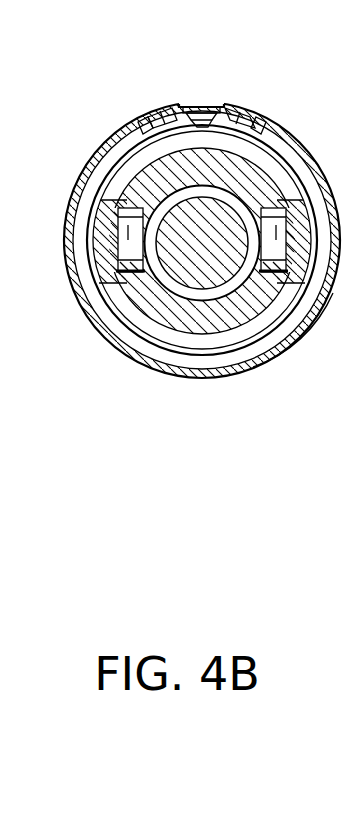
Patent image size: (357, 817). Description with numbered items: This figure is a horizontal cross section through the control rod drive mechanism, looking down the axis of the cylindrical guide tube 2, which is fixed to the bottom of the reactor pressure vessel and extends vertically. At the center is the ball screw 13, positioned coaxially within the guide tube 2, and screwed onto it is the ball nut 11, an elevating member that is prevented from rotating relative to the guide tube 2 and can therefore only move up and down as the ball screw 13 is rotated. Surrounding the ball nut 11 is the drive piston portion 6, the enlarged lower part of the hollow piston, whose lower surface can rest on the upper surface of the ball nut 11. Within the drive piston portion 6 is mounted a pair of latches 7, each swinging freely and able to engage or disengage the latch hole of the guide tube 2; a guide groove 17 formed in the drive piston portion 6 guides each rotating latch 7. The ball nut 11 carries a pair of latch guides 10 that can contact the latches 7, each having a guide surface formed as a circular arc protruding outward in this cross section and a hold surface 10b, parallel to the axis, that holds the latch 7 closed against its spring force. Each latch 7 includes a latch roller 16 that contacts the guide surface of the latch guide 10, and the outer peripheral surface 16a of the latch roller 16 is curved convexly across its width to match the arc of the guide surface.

The guide tube 2 is at (262, 363).
The drive piston portion 6 is at (215, 160).
The latch 7 is at (160, 305).
The latch guide 10 is at (92, 244).
The hold surface 10b is at (142, 273).
The ball nut 11 is at (19, 320).
The ball screw 13 is at (203, 272).
The latch roller 16 is at (101, 81).
The outer peripheral surface 16a is at (122, 207).
The guide groove 17 is at (305, 223).